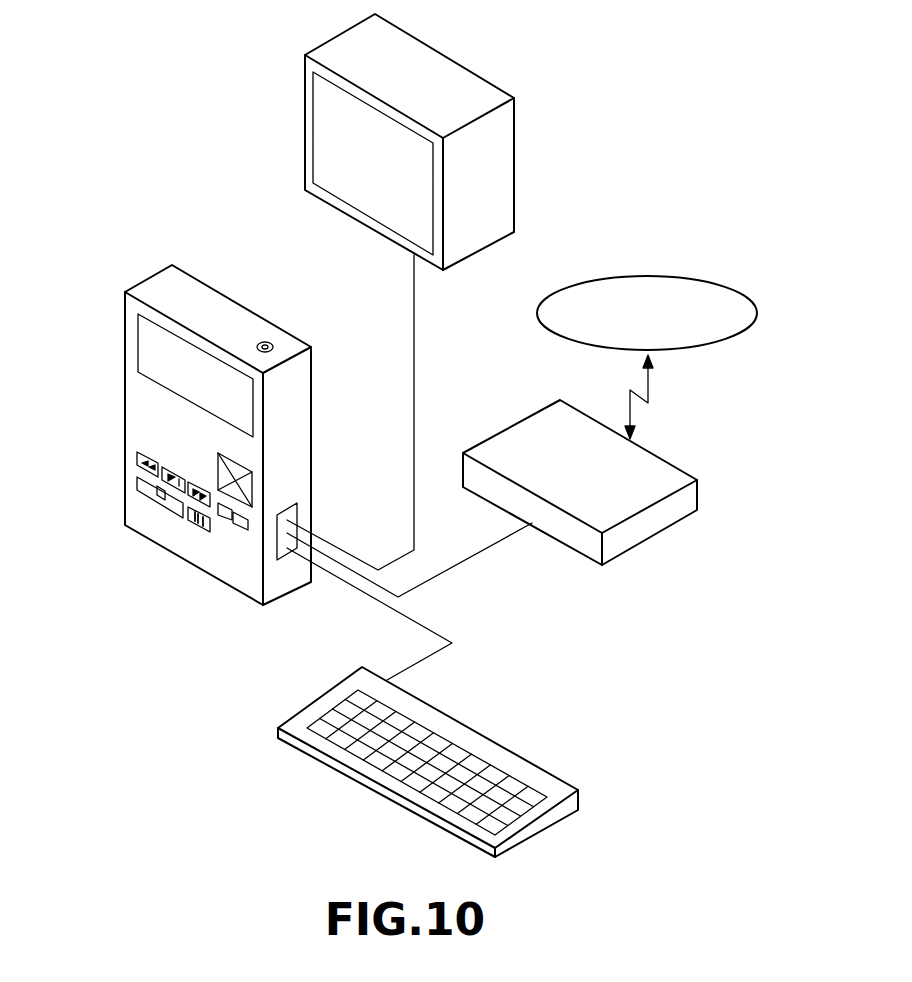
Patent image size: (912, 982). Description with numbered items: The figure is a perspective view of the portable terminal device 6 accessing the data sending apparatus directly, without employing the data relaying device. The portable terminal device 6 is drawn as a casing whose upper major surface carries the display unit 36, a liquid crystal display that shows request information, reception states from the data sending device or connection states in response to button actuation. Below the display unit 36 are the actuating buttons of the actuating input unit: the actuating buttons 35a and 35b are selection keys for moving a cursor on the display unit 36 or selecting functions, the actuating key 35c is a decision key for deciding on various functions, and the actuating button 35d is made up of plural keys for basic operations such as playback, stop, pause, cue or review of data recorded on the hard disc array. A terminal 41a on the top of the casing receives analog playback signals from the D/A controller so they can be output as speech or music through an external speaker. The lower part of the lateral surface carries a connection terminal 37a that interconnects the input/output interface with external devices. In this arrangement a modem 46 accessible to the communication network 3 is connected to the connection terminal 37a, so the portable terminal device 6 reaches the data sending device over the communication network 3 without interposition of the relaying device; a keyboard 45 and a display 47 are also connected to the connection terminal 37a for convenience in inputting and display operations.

The portable terminal device 6 is at (135, 278).
The display unit 36 is at (153, 350).
The terminal 41a is at (265, 342).
The actuating button 35a is at (223, 515).
The actuating button 35b is at (240, 528).
The actuating key 35c is at (252, 487).
The actuating button 35d is at (130, 466).
The connection terminal 37a is at (285, 548).
The display 47 is at (514, 183).
The modem 46 is at (525, 452).
The communication network 3 is at (657, 282).
The keyboard 45 is at (503, 742).